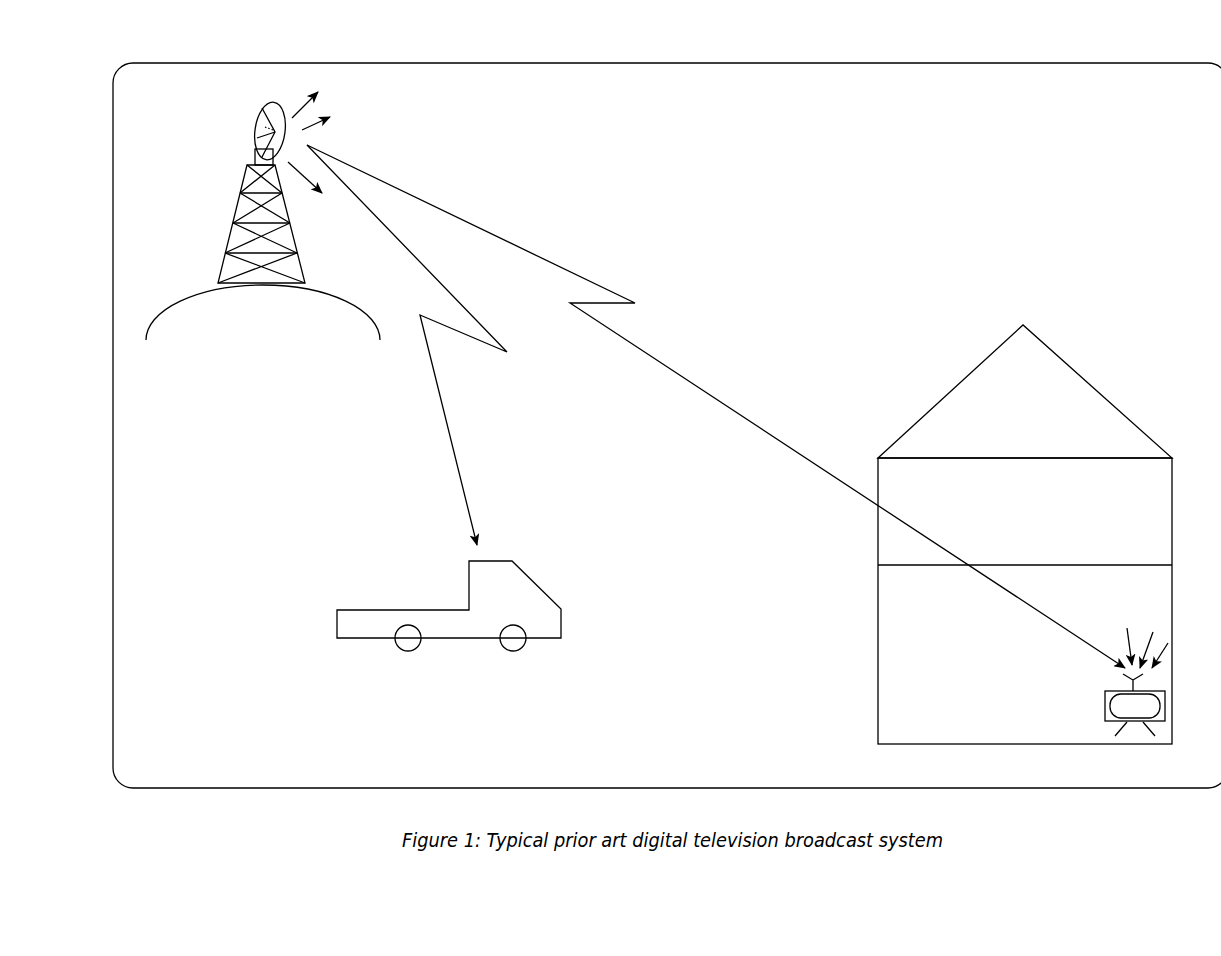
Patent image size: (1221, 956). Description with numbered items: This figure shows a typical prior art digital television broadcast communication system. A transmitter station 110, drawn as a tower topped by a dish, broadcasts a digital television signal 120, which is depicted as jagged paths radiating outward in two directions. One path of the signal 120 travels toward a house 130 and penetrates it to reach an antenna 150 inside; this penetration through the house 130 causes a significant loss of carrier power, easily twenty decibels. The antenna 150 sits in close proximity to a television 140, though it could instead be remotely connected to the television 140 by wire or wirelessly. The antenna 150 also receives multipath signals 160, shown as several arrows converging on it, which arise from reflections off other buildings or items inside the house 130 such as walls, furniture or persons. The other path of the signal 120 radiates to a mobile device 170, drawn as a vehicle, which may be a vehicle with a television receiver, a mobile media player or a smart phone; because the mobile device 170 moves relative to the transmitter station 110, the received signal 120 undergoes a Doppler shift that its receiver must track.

The transmitter station 110 is at (226, 197).
The digital television signal 120 is at (511, 258).
The house 130 is at (863, 682).
The television 140 is at (1102, 711).
The antenna 150 is at (1117, 675).
The multipath signals 160 is at (1135, 620).
The mobile device 170 is at (328, 633).